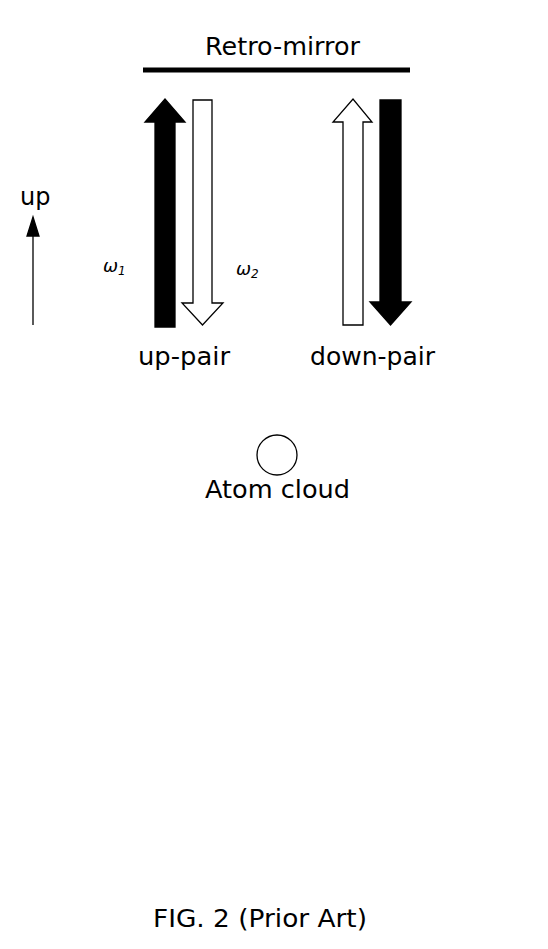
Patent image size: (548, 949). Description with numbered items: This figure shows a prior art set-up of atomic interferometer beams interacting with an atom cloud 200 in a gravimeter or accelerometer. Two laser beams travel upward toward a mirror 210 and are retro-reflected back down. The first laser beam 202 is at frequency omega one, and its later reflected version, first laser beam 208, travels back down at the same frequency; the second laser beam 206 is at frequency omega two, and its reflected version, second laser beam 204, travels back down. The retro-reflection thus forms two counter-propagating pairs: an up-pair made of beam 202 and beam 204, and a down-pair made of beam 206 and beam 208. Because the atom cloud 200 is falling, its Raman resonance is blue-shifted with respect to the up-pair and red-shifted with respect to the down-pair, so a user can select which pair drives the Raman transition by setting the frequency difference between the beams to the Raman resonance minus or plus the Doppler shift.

The atom cloud 200 is at (287, 450).
The first laser beam 202 is at (158, 178).
The second laser beam 204 is at (200, 163).
The second laser beam 206 is at (357, 175).
The first laser beam 208 is at (401, 145).
The mirror 210 is at (410, 70).